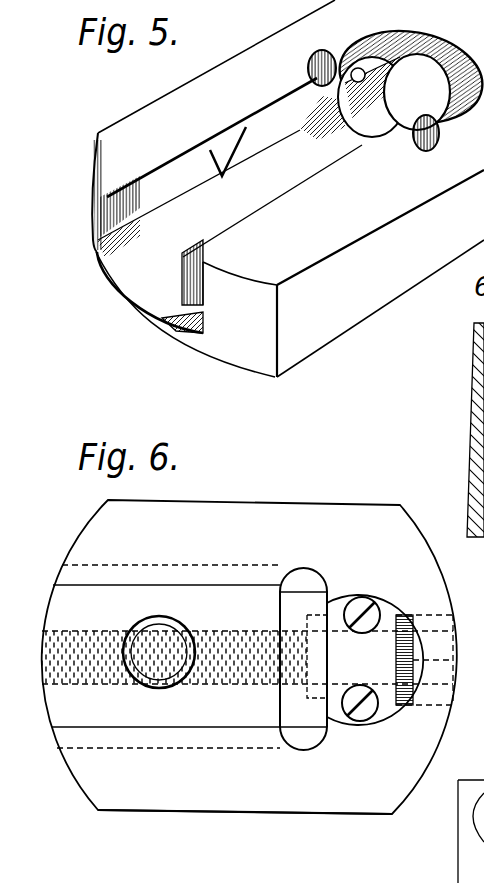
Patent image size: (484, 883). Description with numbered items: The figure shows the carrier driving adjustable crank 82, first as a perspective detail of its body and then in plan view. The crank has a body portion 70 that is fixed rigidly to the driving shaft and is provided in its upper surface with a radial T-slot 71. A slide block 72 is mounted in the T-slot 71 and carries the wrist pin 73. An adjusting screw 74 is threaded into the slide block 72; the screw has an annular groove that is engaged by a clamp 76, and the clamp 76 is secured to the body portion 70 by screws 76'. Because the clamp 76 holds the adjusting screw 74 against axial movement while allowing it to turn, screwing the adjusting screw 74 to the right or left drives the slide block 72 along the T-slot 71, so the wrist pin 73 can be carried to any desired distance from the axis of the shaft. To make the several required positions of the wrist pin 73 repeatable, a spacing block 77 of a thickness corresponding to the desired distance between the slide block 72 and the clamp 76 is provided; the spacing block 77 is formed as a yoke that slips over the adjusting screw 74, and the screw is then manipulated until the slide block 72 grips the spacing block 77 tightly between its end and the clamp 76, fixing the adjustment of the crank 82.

In FIG. 5, the body portion 70 is at (288, 188).
In FIG. 6, the body portion 70 is at (249, 657).
In FIG. 5, the radial T-slot 71 is at (138, 273).
In FIG. 6, the slide block 72 is at (172, 667).
In FIG. 6, the wrist pin 73 is at (158, 622).
In FIG. 6, the adjusting screw 74 is at (262, 632).
In FIG. 6, the clamp 76 is at (390, 660).
In FIG. 6, the screws 76' is at (361, 726).
In FIG. 6, the spacing block 77 is at (303, 659).
In FIG. 6, the adjustable crank 82 is at (266, 812).